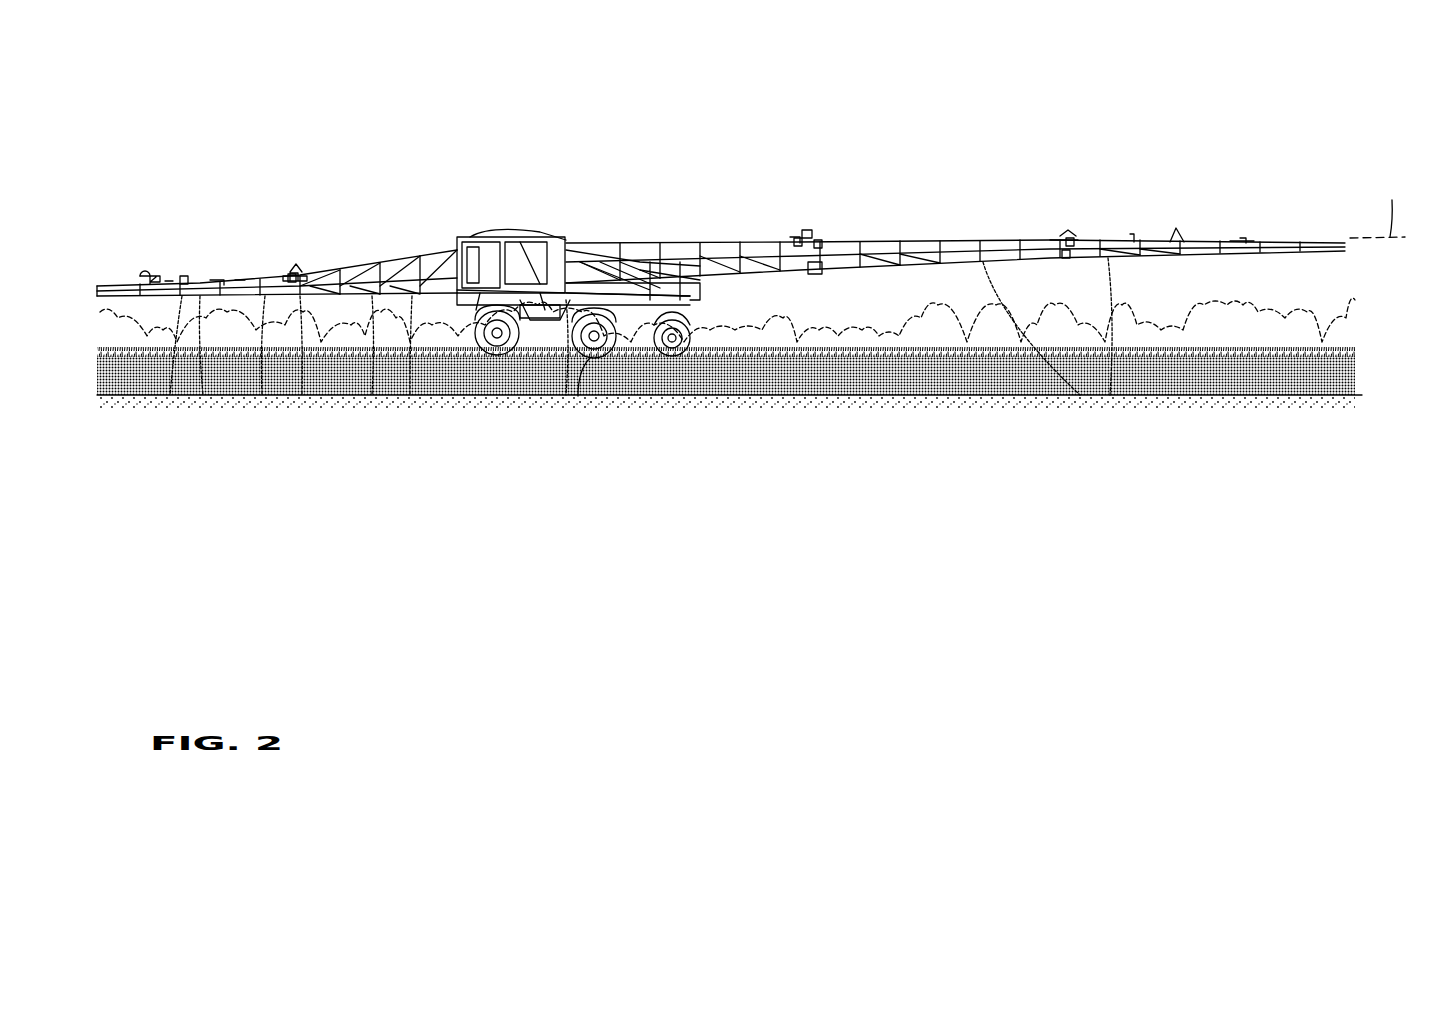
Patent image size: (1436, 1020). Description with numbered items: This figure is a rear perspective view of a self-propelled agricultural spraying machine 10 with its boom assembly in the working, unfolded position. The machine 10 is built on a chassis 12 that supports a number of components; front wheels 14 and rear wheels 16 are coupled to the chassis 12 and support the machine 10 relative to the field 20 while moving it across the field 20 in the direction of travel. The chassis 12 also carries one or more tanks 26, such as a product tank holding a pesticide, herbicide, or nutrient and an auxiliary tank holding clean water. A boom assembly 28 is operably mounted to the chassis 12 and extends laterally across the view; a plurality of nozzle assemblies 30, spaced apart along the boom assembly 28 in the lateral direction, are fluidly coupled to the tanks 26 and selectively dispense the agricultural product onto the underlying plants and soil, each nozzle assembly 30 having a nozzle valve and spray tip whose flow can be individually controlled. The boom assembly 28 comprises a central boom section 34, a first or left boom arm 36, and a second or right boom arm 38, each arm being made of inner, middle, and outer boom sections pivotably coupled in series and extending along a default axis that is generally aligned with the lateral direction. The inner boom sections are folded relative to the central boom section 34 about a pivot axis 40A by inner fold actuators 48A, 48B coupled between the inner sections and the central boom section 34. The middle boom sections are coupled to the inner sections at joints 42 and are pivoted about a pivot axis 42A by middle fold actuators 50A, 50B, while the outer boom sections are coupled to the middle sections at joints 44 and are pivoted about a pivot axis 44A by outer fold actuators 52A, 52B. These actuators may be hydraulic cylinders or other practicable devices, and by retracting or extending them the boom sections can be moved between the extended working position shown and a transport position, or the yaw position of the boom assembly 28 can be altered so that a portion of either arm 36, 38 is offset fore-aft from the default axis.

The machine 10 is at (440, 118).
The chassis 12 is at (535, 396).
The front wheels 14 is at (738, 396).
The rear wheels 16 is at (453, 396).
The field 20 is at (1263, 396).
The tank 26 is at (676, 396).
The boom assembly 28 is at (755, 211).
The nozzle assemblies 30 is at (152, 300).
The central boom section 34 is at (476, 228).
The first (left) boom arm 36 is at (272, 242).
The second (right) boom arm 38 is at (998, 210).
The pivot axis 40A is at (372, 396).
The joints 42 is at (262, 396).
The pivot axis 42A is at (293, 272).
The joints 44 is at (172, 396).
The pivot axis 44A is at (185, 280).
The inner fold actuator 48A is at (410, 396).
The inner fold actuator 48B is at (578, 396).
The middle fold actuator 50A is at (302, 396).
The middle fold actuator 50B is at (797, 240).
The outer fold actuator 52A is at (203, 396).
The outer fold actuator 52B is at (1080, 396).